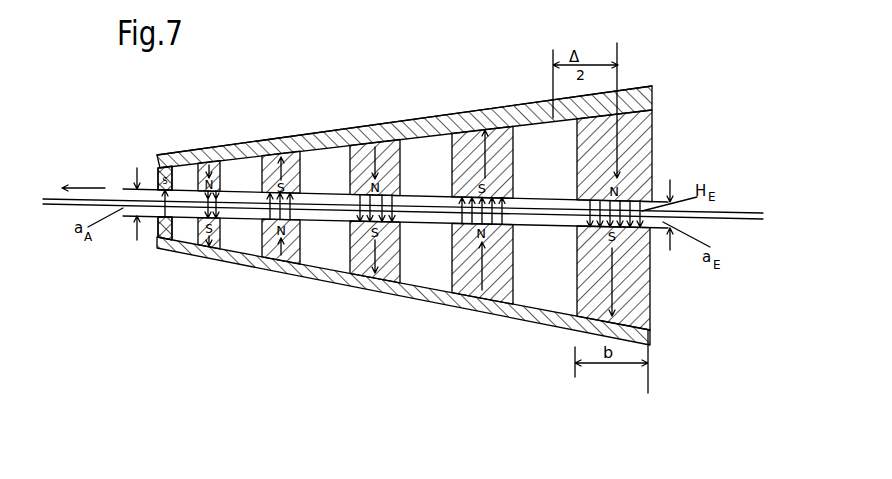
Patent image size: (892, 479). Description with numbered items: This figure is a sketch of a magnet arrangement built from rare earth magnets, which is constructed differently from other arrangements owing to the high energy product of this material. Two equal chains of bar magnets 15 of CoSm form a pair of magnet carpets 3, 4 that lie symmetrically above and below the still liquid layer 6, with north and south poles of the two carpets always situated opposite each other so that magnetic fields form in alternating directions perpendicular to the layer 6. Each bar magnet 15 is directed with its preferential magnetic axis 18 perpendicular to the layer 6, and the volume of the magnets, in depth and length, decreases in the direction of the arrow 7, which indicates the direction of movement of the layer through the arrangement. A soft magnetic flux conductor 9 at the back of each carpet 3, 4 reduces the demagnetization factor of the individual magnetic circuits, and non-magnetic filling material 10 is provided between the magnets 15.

The magnet carpet 3 is at (653, 152).
The magnet carpet 4 is at (652, 278).
The still liquid layer 6 is at (725, 215).
The arrow 7 is at (83, 179).
The soft magnetic flux conductor 9 is at (405, 122).
The non-magnetic filling material 10 is at (423, 270).
The bar magnets 15 is at (497, 163).
The preferential magnetic axis 18 is at (258, 150).